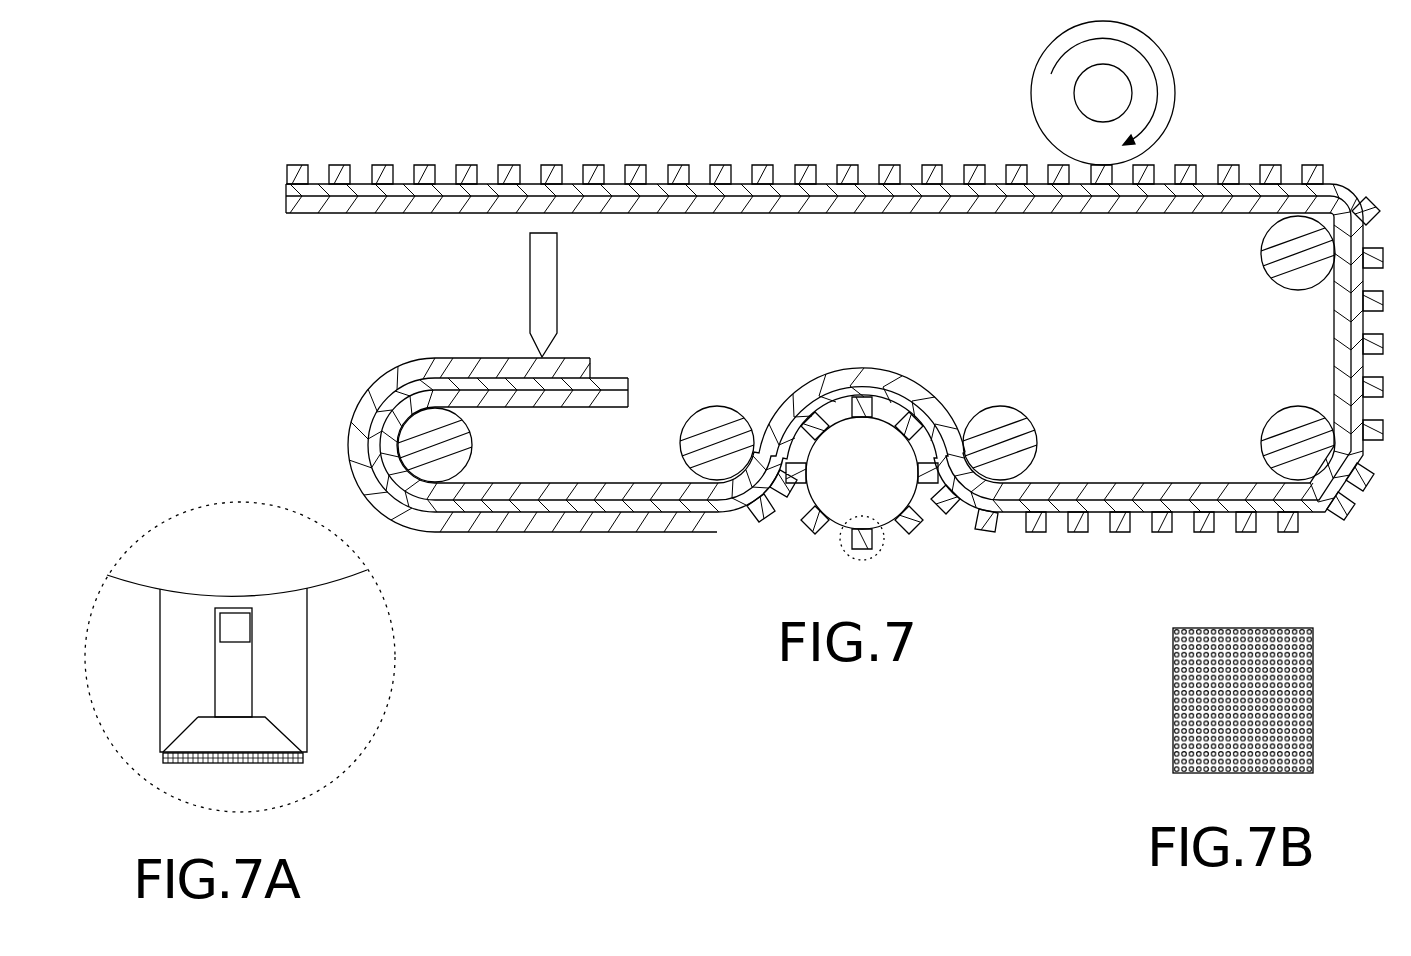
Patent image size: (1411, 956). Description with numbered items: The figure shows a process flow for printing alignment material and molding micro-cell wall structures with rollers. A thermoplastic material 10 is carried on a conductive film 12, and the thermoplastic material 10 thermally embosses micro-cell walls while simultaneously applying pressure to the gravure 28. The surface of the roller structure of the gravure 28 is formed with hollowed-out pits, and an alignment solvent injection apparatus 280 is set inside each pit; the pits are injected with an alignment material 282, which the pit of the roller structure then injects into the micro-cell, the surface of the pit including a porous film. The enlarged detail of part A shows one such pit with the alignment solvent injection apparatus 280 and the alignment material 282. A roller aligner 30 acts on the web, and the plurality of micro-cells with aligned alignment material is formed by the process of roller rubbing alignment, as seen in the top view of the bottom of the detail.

In FIG. 7, the thermoplastic material 10 is at (582, 365).
In FIG. 7, the conductive film 12 is at (628, 380).
In FIG. 7, the gravure 28 is at (882, 502).
In FIG. 7, the roller aligner 30 is at (1176, 94).
In FIG. 7, the part A is at (843, 548).
In FIG. 7A, the alignment solvent injection apparatus 280 is at (243, 625).
In FIG. 7A, the alignment material 282 is at (235, 678).